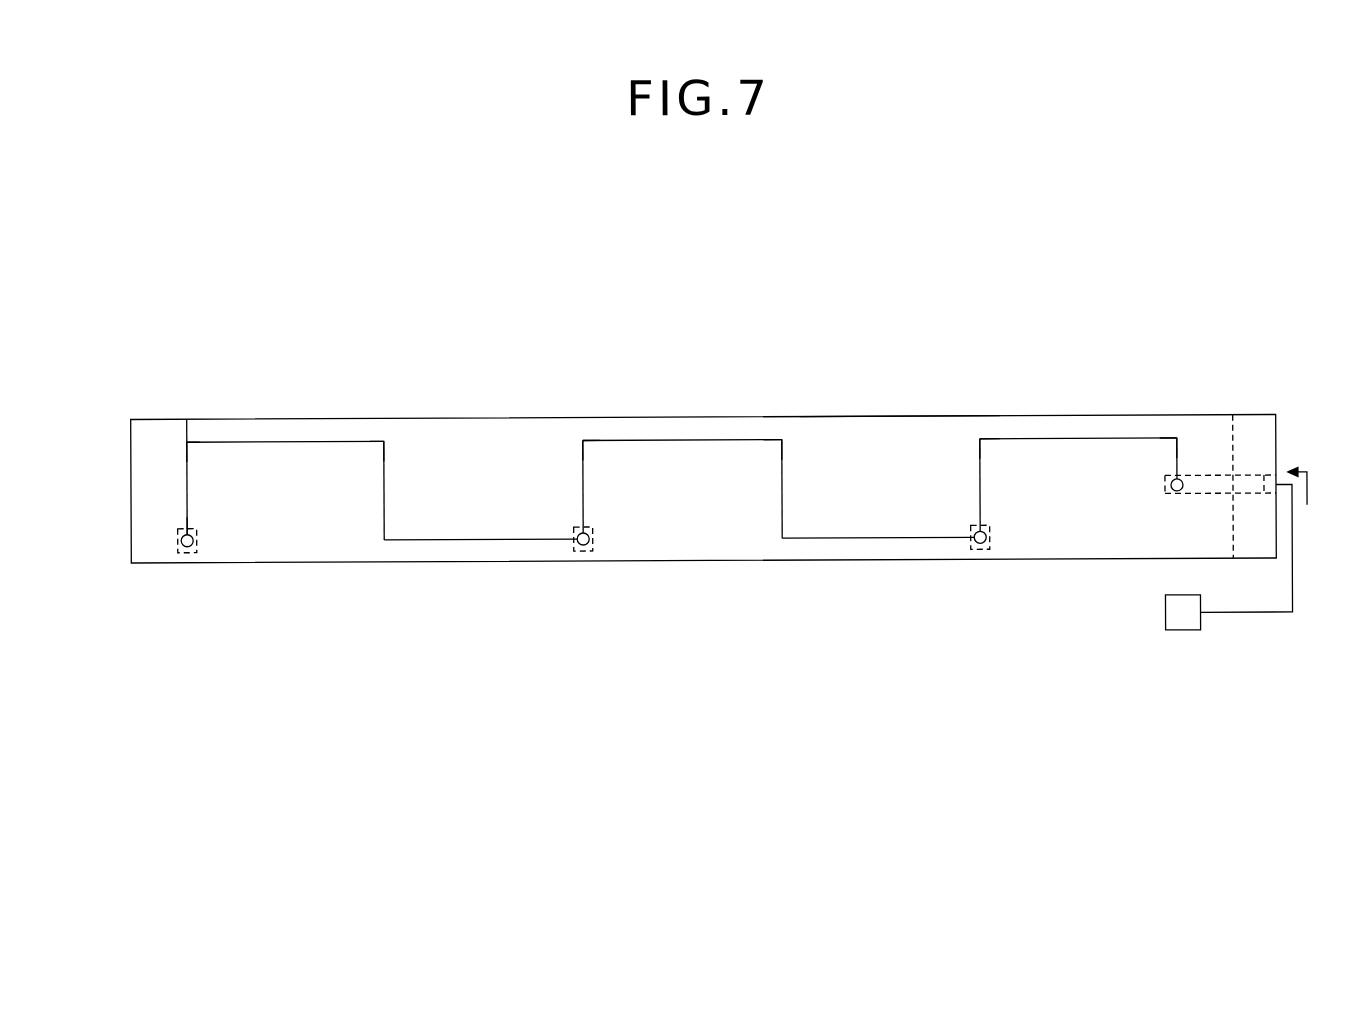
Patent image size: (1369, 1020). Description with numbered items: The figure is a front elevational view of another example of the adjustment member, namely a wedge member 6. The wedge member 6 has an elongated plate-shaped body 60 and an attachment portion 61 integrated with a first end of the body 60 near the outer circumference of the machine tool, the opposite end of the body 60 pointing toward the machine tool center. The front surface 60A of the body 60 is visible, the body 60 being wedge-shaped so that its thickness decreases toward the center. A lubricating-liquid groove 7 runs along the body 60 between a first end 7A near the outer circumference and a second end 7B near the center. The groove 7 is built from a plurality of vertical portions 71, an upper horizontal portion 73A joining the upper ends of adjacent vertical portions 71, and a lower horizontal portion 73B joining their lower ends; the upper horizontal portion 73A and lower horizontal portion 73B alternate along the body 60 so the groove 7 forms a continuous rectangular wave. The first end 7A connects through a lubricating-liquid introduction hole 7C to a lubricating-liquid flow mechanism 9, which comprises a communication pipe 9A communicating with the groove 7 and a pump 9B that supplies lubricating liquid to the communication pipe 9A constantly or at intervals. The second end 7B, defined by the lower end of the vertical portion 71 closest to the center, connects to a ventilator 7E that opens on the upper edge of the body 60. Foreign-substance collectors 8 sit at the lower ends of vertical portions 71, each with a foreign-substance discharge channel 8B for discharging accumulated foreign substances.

The wedge member 6 is at (948, 352).
The lubricating-liquid groove 7 is at (811, 434).
The first end of the lubricating-liquid groove 7A is at (1170, 488).
The second end of the lubricating-liquid groove 7B is at (194, 538).
The lubricating-liquid introduction hole 7C is at (1252, 477).
The ventilator 7E is at (188, 430).
The foreign-substance collector 8 is at (181, 540).
The foreign-substance discharge channel 8B is at (197, 552).
The lubricating-liquid flow mechanism 9 is at (1229, 603).
The communication pipe 9A is at (1255, 615).
The pump 9B is at (1182, 643).
The body 60 is at (556, 418).
The front surface 60A is at (893, 431).
The attachment portion 61 is at (1232, 436).
The vertical portion 71 is at (188, 478).
The upper horizontal portion 73A is at (303, 440).
The lower horizontal portion 73B is at (470, 539).